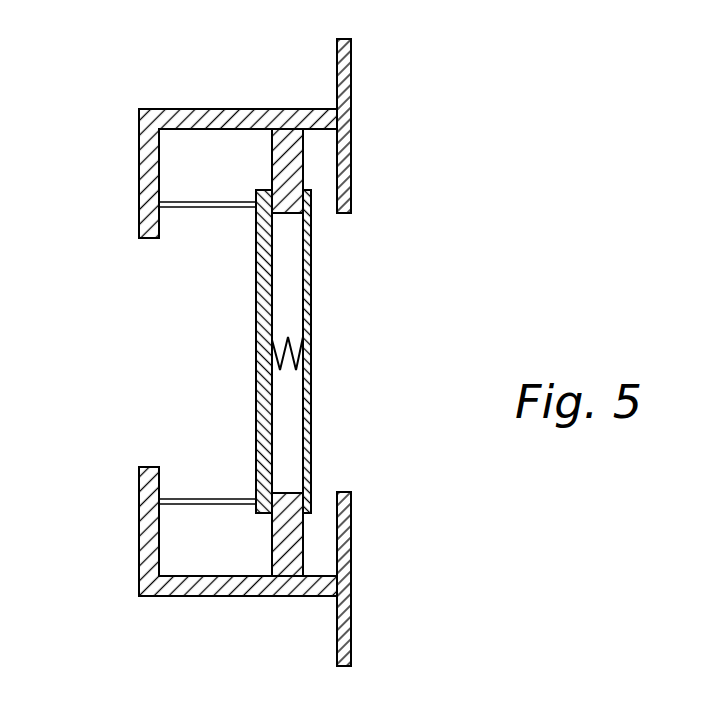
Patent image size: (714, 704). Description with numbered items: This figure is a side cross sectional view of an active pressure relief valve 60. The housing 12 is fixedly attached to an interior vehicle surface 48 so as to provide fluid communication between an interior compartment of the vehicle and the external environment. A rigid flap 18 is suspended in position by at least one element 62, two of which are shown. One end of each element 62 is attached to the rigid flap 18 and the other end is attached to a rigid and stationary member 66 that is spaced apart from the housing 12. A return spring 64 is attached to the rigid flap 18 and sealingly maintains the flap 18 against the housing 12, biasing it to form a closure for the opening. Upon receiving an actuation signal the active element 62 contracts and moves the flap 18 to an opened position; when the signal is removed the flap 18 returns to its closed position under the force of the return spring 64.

The housing 12 is at (282, 165).
The rigid flap 18 is at (256, 398).
The interior vehicle surface 48 is at (337, 78).
The active pressure relief valve 60 is at (490, 188).
The element 62 is at (210, 208).
The return spring 64 is at (283, 336).
The rigid and stationary member 66 is at (138, 168).